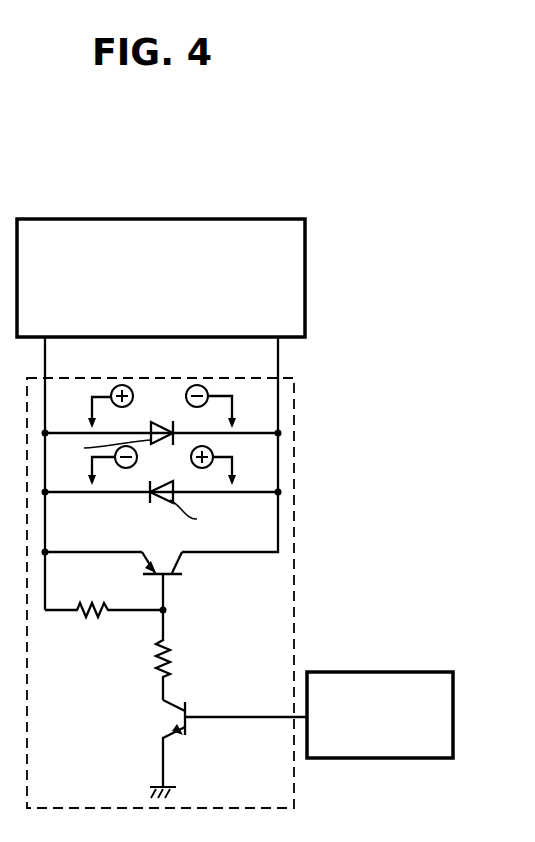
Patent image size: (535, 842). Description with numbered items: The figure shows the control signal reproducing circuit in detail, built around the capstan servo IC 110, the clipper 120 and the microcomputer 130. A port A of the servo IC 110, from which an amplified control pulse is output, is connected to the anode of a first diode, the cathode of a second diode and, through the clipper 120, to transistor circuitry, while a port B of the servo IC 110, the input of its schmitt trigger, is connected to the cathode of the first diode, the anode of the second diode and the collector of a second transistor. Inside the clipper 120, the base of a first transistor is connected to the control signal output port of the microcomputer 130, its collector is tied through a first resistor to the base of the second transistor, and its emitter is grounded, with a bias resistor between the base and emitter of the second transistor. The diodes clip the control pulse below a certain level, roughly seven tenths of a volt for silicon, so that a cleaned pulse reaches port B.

The capstan servo IC 110 is at (160, 218).
The clipper 120 is at (294, 569).
The microcomputer 130 is at (340, 671).